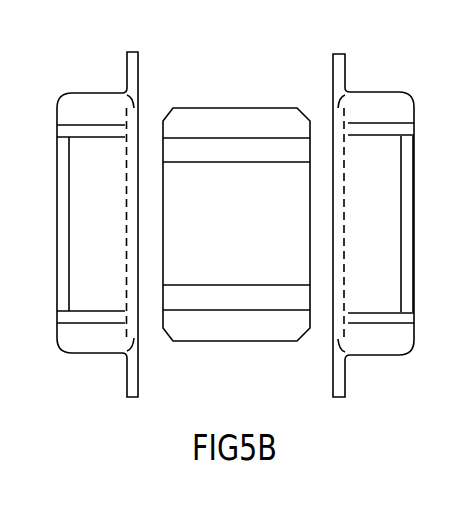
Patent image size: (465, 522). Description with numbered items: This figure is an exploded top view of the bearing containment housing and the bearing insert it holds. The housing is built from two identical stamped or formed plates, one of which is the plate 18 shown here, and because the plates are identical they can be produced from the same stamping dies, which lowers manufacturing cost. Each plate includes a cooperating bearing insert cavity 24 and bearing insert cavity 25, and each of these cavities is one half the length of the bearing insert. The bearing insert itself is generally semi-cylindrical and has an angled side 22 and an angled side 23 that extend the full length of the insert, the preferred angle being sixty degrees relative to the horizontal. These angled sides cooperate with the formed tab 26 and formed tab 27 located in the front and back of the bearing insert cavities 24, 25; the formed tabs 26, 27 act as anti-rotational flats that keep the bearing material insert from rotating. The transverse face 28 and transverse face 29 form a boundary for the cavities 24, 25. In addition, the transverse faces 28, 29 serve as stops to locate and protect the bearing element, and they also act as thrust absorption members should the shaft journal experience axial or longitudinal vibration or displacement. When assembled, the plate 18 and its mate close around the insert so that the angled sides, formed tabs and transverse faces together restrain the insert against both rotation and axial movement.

The stamped plate 18 is at (69, 224).
The angled side 22 is at (225, 128).
The angled side 23 is at (257, 328).
The bearing insert cavity 24 is at (399, 225).
The bearing insert cavity 25 is at (384, 205).
The formed tab 26 is at (75, 342).
The formed tab 27 is at (92, 103).
The transverse face 28 is at (58, 257).
The transverse face 29 is at (410, 250).